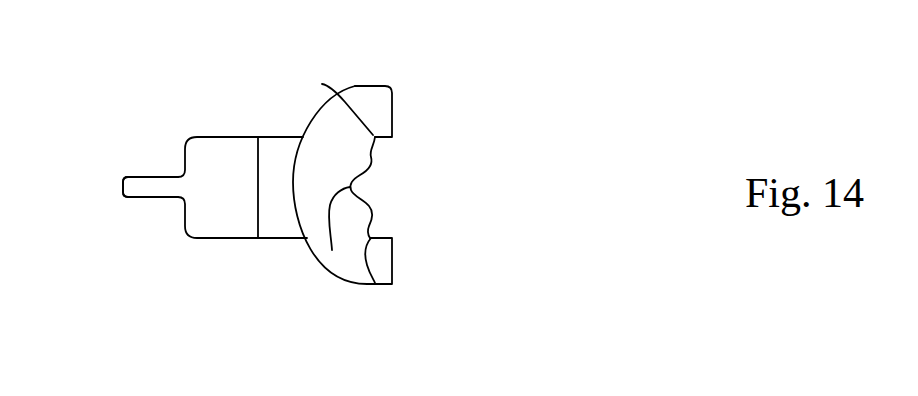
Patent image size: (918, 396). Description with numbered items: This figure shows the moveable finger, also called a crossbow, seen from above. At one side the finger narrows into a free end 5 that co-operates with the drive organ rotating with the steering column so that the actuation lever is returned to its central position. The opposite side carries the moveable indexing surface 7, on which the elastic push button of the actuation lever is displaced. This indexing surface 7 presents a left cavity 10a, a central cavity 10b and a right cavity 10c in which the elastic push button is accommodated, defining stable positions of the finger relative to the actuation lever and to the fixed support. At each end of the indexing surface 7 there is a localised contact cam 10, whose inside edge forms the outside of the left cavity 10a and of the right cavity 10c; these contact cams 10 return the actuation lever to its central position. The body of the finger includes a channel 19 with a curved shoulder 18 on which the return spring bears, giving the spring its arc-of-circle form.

The free end 5 is at (129, 185).
The indexing surface 7 is at (373, 197).
The contact cam 10 is at (390, 105).
The left cavity 10a is at (375, 283).
The central cavity 10b is at (332, 250).
The right cavity 10c is at (322, 84).
The shoulder 18 is at (293, 182).
The channel 19 is at (271, 213).